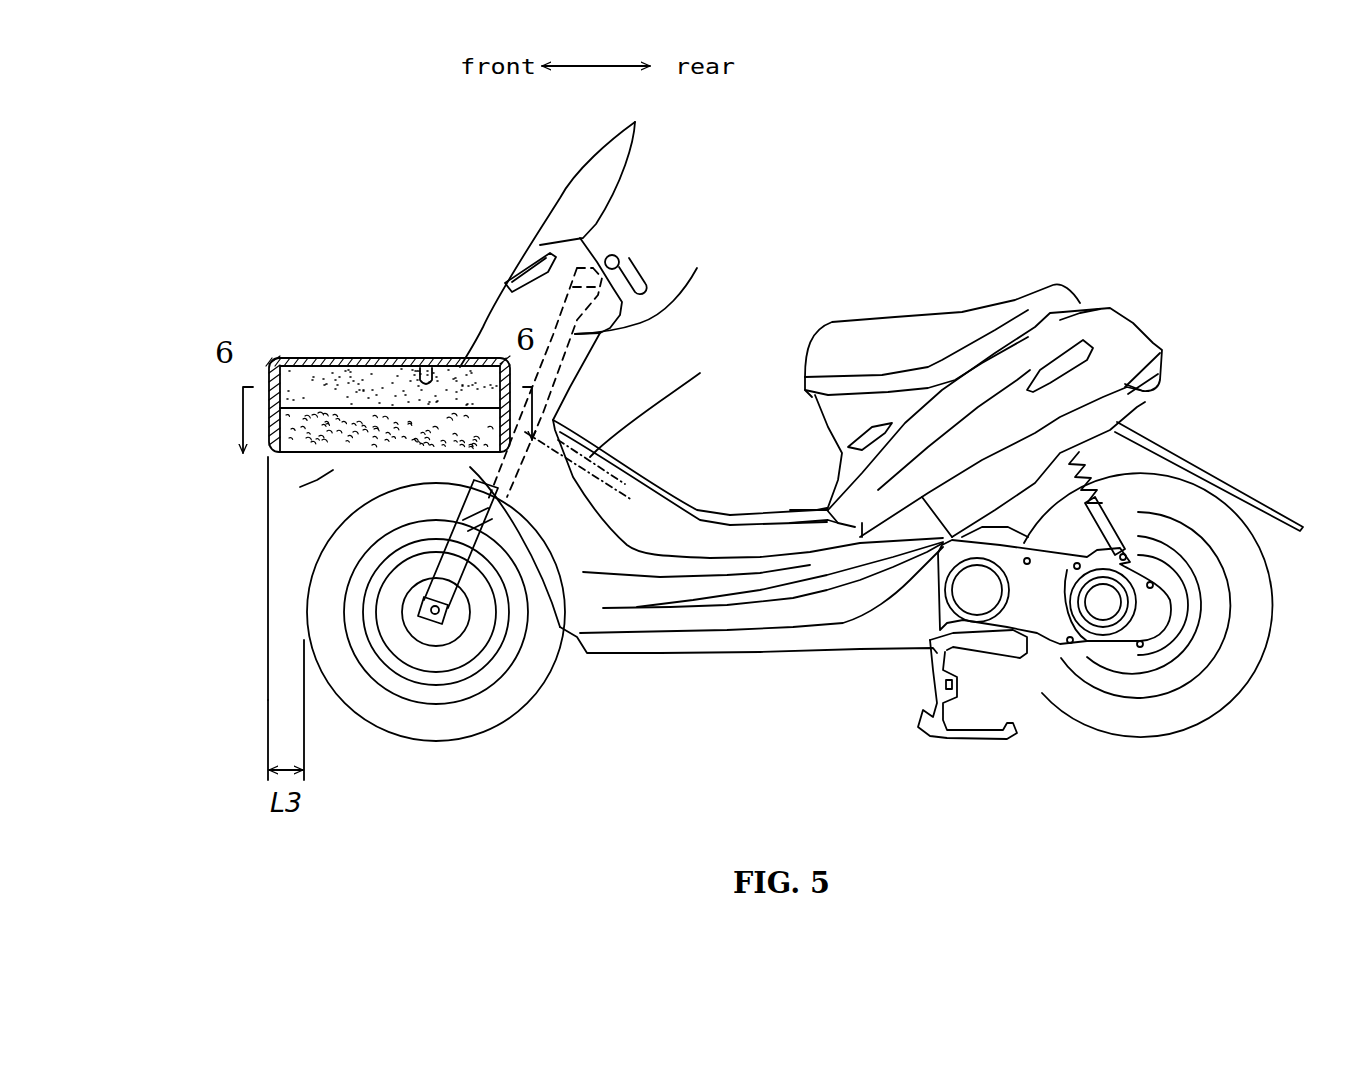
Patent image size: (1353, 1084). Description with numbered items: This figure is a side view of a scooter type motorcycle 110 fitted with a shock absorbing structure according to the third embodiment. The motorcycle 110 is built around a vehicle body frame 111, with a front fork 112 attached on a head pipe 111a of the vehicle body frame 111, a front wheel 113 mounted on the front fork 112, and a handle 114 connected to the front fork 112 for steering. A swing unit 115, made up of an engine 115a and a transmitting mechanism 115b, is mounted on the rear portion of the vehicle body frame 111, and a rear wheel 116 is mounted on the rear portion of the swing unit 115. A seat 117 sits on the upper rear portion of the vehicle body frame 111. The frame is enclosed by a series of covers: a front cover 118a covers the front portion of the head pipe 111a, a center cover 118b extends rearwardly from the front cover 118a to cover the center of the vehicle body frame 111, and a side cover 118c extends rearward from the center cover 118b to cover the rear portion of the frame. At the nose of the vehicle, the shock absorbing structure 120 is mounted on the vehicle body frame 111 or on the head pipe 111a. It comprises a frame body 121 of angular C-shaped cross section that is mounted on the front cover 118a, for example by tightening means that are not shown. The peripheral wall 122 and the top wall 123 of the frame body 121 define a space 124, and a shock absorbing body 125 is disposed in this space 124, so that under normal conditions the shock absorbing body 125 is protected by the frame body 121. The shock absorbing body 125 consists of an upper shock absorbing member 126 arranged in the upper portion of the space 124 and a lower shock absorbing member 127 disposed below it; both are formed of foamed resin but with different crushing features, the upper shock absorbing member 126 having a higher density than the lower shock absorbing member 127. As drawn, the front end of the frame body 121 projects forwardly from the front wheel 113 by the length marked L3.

The motorcycle 110 is at (871, 168).
The vehicle body frame 111 is at (700, 373).
The head pipe 111a is at (712, 255).
The front fork 112 is at (480, 484).
The front wheel 113 is at (316, 601).
The handle 114 is at (618, 256).
The swing unit 115 is at (1014, 686).
The engine 115a is at (955, 552).
The transmitting mechanism 115b is at (1057, 623).
The rear wheel 116 is at (1168, 728).
The seat 117 is at (912, 330).
The front cover 118a is at (483, 327).
The center cover 118b is at (660, 500).
The side cover 118c is at (1012, 390).
The shock absorbing structure 120 is at (384, 302).
The frame body 121 is at (384, 339).
The peripheral wall 122 is at (275, 403).
The top wall 123 is at (365, 368).
The space 124 is at (414, 325).
The shock absorbing body 125 is at (235, 575).
The upper shock absorbing member 126 is at (273, 450).
The lower shock absorbing member 127 is at (357, 450).